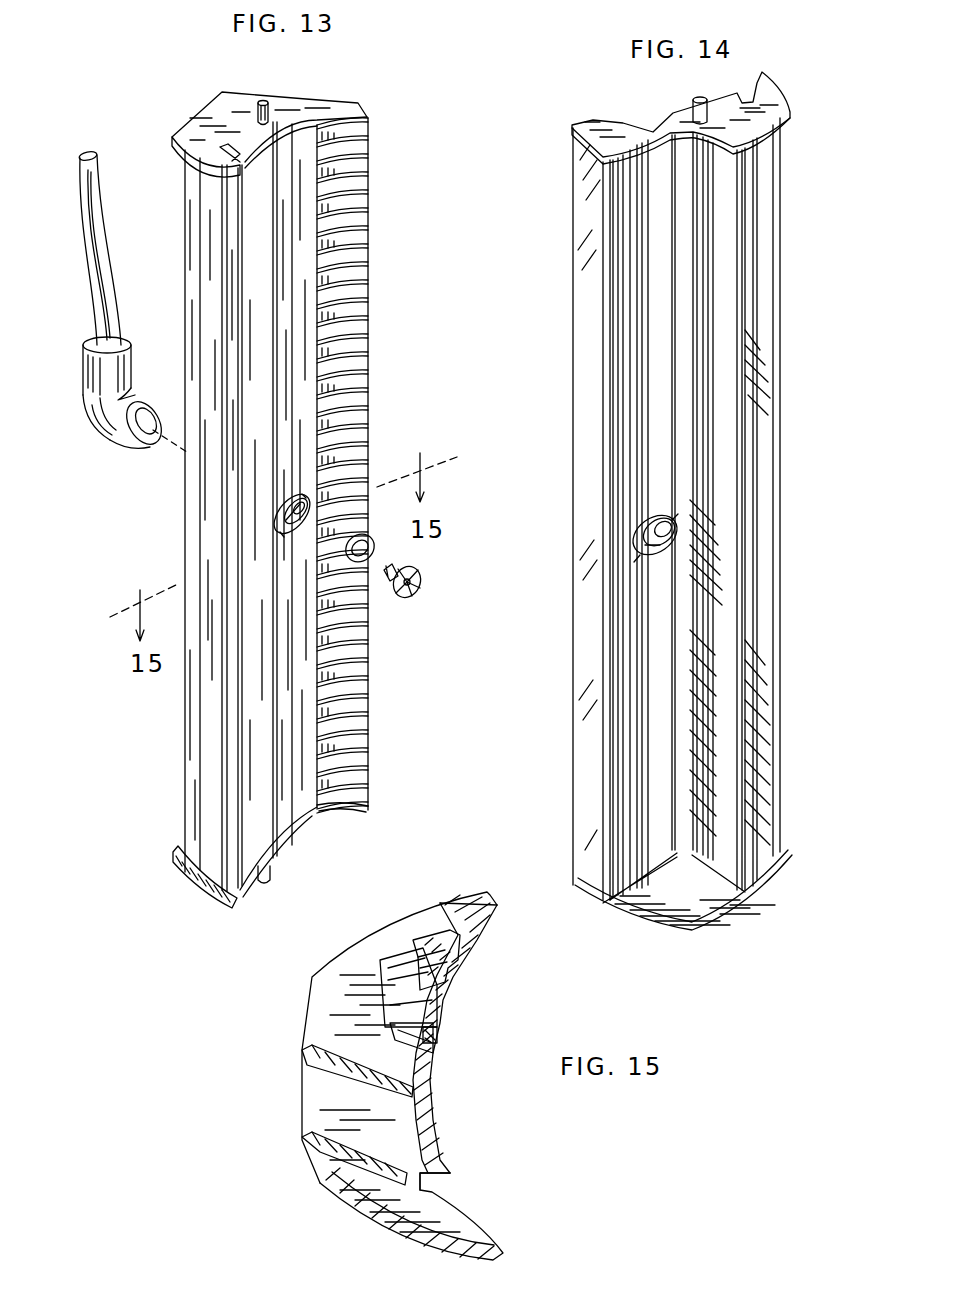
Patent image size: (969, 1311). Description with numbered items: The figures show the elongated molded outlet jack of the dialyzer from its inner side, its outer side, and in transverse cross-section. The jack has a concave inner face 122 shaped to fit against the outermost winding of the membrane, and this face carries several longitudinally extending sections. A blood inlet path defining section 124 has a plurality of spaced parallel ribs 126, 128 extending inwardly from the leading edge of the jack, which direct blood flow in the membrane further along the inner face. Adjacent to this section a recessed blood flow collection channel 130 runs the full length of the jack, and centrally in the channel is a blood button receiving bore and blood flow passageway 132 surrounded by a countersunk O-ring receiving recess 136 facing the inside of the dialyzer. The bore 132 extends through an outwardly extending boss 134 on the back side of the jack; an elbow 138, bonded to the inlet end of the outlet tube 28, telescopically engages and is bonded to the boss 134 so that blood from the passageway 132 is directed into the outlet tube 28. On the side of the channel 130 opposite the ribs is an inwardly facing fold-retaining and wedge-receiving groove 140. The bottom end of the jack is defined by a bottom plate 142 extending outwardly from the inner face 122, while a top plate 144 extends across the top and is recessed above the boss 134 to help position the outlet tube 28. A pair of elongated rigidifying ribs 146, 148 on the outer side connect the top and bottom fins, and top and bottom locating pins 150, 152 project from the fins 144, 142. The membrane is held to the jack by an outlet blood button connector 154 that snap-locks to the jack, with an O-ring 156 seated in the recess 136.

In FIG. 13, the outlet tube 28 is at (96, 308).
In FIG. 13, the concave inner face 122 is at (320, 898).
In FIG. 13, the blood inlet path defining section 124 is at (347, 813).
In FIG. 13, the rib 126 is at (372, 133).
In FIG. 13, the rib 128 is at (372, 157).
In FIG. 13, the blood flow collection channel 130 is at (302, 823).
In FIG. 13, the blood button receiving bore and blood flow passageway 132 is at (306, 520).
In FIG. 15, the blood button receiving bore and blood flow passageway 132 is at (440, 1000).
In FIG. 14, the boss 134 is at (636, 560).
In FIG. 15, the boss 134 is at (417, 940).
In FIG. 13, the O-ring receiving recess 136 is at (300, 512).
In FIG. 15, the O-ring receiving recess 136 is at (440, 1044).
In FIG. 13, the elbow 138 is at (112, 437).
In FIG. 13, the fold-retaining and wedge-receiving groove 140 is at (240, 903).
In FIG. 15, the fold-retaining and wedge-receiving groove 140 is at (452, 1174).
In FIG. 14, the bottom plate 142 is at (716, 905).
In FIG. 14, the top plate 144 is at (792, 112).
In FIG. 14, the rigidifying rib 146 is at (782, 362).
In FIG. 15, the rigidifying rib 146 is at (320, 1165).
In FIG. 14, the rigidifying rib 148 is at (745, 422).
In FIG. 15, the rigidifying rib 148 is at (305, 1068).
In FIG. 13, the top locating pin 150 is at (268, 103).
In FIG. 13, the bottom locating pin 152 is at (265, 882).
In FIG. 13, the outlet blood button connector 154 is at (411, 596).
In FIG. 13, the O-ring 156 is at (352, 560).
In FIG. 15, the O-ring 156 is at (440, 1045).